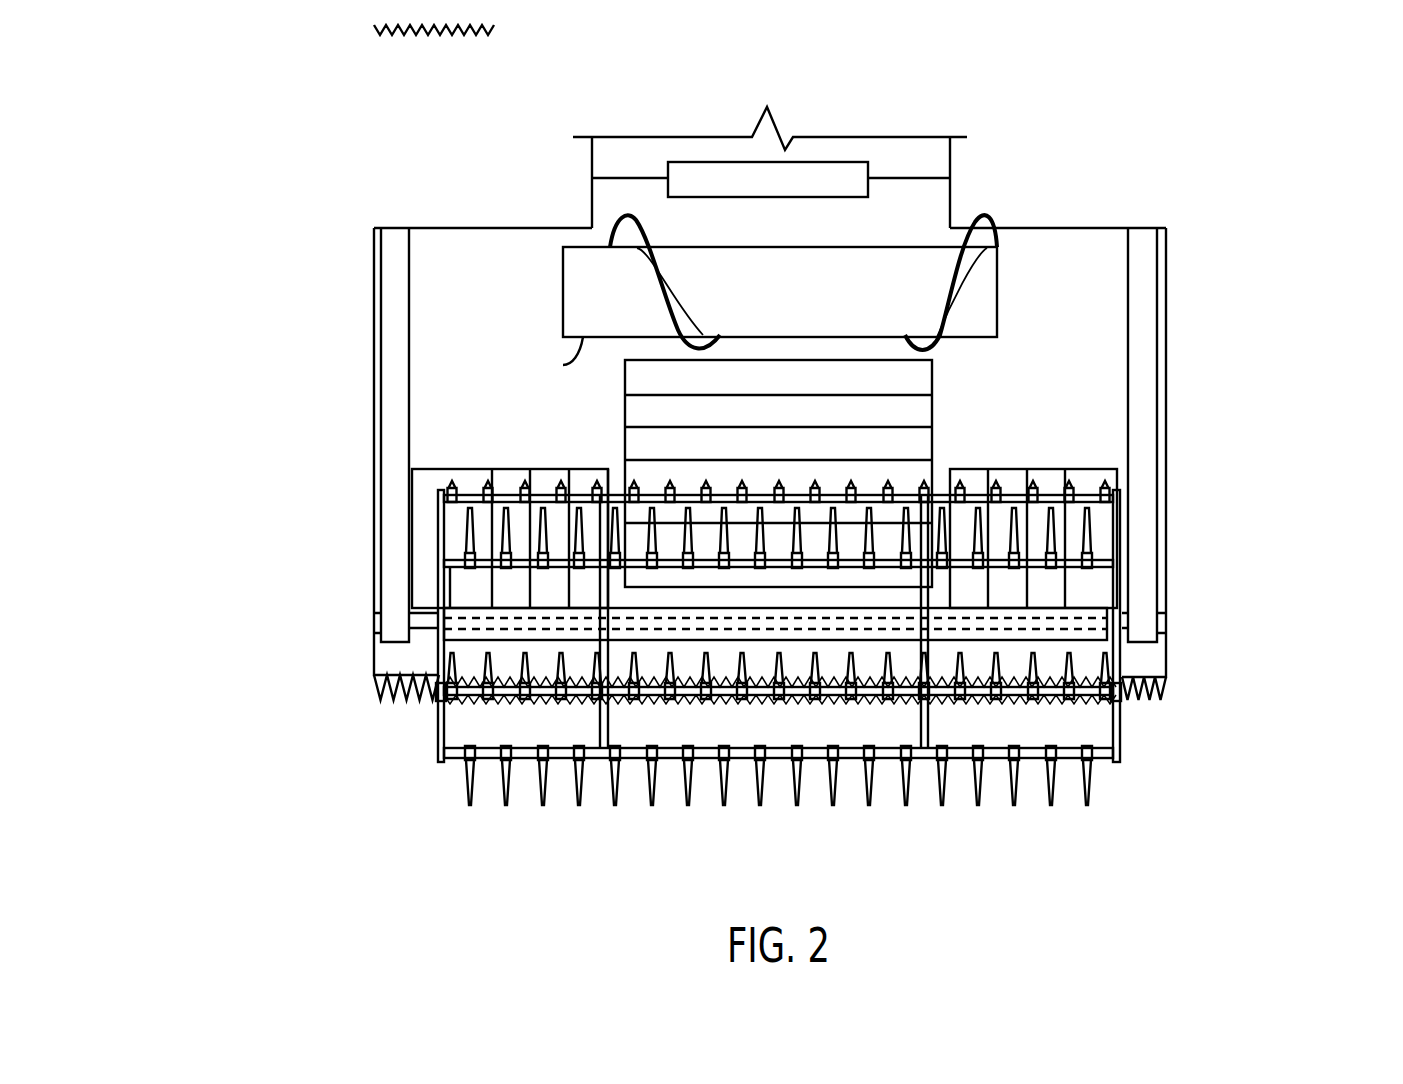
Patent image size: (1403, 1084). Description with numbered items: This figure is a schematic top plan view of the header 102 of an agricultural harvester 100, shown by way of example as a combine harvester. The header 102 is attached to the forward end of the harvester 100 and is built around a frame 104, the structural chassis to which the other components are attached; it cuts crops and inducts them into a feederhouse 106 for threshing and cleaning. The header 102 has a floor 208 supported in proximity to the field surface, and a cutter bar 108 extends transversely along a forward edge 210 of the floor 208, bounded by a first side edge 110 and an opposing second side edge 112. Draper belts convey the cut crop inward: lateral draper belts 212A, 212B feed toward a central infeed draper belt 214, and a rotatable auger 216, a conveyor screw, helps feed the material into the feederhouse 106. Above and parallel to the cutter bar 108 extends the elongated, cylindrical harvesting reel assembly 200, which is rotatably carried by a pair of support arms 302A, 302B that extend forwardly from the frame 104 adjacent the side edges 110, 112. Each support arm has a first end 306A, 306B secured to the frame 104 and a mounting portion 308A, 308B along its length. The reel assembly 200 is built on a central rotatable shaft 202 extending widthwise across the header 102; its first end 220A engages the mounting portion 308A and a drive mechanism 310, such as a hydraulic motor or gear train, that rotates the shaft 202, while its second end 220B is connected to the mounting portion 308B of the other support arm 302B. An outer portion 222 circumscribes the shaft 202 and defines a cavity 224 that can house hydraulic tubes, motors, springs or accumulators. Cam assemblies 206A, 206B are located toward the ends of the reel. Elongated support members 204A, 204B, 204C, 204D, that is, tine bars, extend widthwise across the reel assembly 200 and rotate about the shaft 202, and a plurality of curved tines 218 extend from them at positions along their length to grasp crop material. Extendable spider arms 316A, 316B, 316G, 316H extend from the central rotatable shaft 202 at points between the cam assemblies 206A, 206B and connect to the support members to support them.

The agricultural harvester 100 is at (685, 136).
The header 102 is at (1170, 130).
The frame 104 is at (1087, 230).
The feederhouse 106 is at (845, 177).
The cutter bar 108 is at (383, 688).
The first side edge 110 is at (1167, 303).
The second side edge 112 is at (372, 275).
The harvesting reel assembly 200 is at (1125, 800).
The central rotatable shaft 202 is at (425, 630).
The support member 204A is at (497, 490).
The second comb row 204B is at (548, 520).
The third comb row 204C is at (467, 700).
The fourth comb row 204D is at (450, 760).
The cam assembly 206A is at (1122, 762).
The cam assembly 206B is at (437, 723).
The floor 208 is at (1155, 660).
The forward edge 210 is at (752, 660).
The lateral draper belt 212A is at (1083, 478).
The lateral draper belt 212B is at (427, 487).
The infeed draper belt 214 is at (913, 377).
The rotatable auger 216 is at (923, 262).
The tines 218 is at (970, 777).
The first end 220A is at (1145, 585).
The second end 220B is at (390, 627).
The outer portion 222 is at (508, 642).
The cavity 224 is at (676, 645).
The support arm 302A is at (1140, 463).
The support arm 302B is at (397, 357).
The first end 306A is at (1148, 228).
The first end 306B is at (375, 232).
The mounting portion 308A is at (1142, 645).
The mounting portion 308B is at (393, 595).
The drive mechanism 310 is at (1168, 623).
The extendable spider arm 316A is at (917, 713).
The divider 316B is at (917, 587).
The divider 316G is at (606, 738).
The divider 316H is at (600, 740).